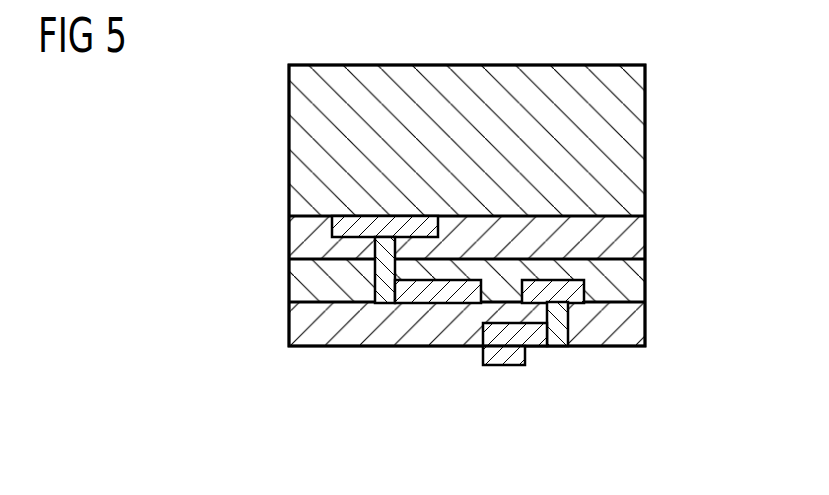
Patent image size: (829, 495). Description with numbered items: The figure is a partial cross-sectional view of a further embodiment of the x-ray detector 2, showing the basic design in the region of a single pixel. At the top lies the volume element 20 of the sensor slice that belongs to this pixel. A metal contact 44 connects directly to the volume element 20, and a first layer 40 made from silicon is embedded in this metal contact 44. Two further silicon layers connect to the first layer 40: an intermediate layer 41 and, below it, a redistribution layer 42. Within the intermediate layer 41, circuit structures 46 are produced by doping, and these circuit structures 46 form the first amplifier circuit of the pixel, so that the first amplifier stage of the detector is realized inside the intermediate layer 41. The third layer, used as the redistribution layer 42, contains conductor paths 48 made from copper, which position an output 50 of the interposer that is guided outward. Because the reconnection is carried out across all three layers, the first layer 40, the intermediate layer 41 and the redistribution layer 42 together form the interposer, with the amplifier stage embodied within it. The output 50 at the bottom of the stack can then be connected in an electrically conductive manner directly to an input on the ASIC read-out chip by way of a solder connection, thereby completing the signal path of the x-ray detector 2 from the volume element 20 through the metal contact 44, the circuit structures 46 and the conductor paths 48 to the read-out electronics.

The x-ray detector 2 is at (250, 103).
The volume element 20 is at (633, 137).
The first layer 40 is at (633, 228).
The intermediate layer 41 is at (633, 283).
The redistribution layer 42 is at (633, 330).
The metal contact 44 is at (350, 226).
The circuit structures 46 is at (382, 276).
The conductor paths 48 is at (535, 340).
The output 50 is at (493, 358).